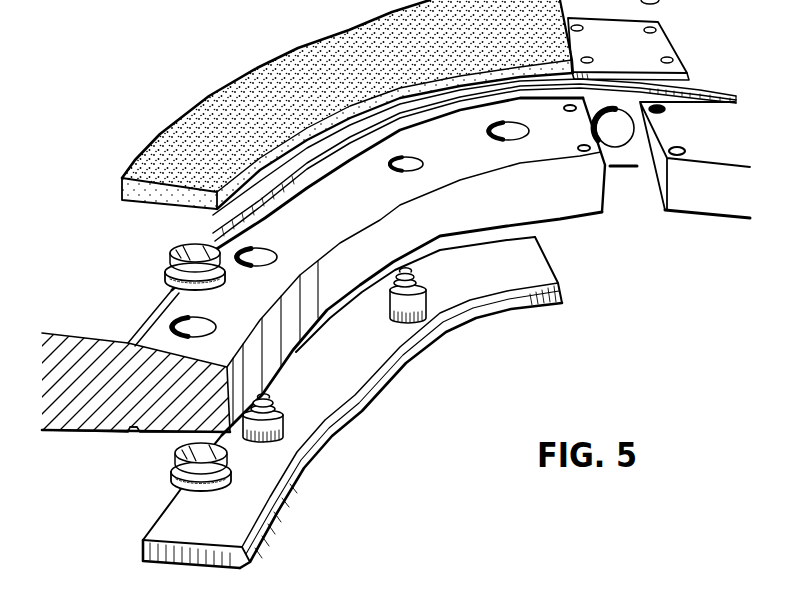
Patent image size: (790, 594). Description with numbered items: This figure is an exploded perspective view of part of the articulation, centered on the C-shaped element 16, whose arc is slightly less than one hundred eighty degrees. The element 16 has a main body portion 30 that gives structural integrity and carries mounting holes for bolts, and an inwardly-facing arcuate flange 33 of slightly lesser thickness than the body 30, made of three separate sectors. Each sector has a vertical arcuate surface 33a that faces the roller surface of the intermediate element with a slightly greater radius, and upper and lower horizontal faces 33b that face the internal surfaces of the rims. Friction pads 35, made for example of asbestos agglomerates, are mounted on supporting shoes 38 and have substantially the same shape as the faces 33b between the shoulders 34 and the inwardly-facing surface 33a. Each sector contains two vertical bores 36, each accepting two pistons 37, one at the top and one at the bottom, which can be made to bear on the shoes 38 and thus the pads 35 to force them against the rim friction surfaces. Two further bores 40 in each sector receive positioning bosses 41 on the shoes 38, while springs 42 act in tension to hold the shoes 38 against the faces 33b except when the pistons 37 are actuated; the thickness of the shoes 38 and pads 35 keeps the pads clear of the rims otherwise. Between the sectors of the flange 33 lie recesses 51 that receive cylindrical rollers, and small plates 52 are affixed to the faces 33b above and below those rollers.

The element 16 is at (121, 223).
The main body portion 30 is at (72, 408).
The arcuate flange 33 is at (173, 418).
The vertical arcuate surface 33a is at (588, 200).
The horizontal faces 33b is at (388, 194).
The shoulders 34 is at (156, 304).
The friction pads 35 is at (253, 93).
The vertical bores 36 is at (210, 325).
The pistons 37 is at (169, 251).
The supporting shoes 38 is at (307, 146).
The bores 40 is at (266, 256).
The positioning bosses 41 is at (284, 424).
The springs 42 is at (268, 395).
The recesses 51 is at (672, 160).
The small plates 52 is at (658, 47).